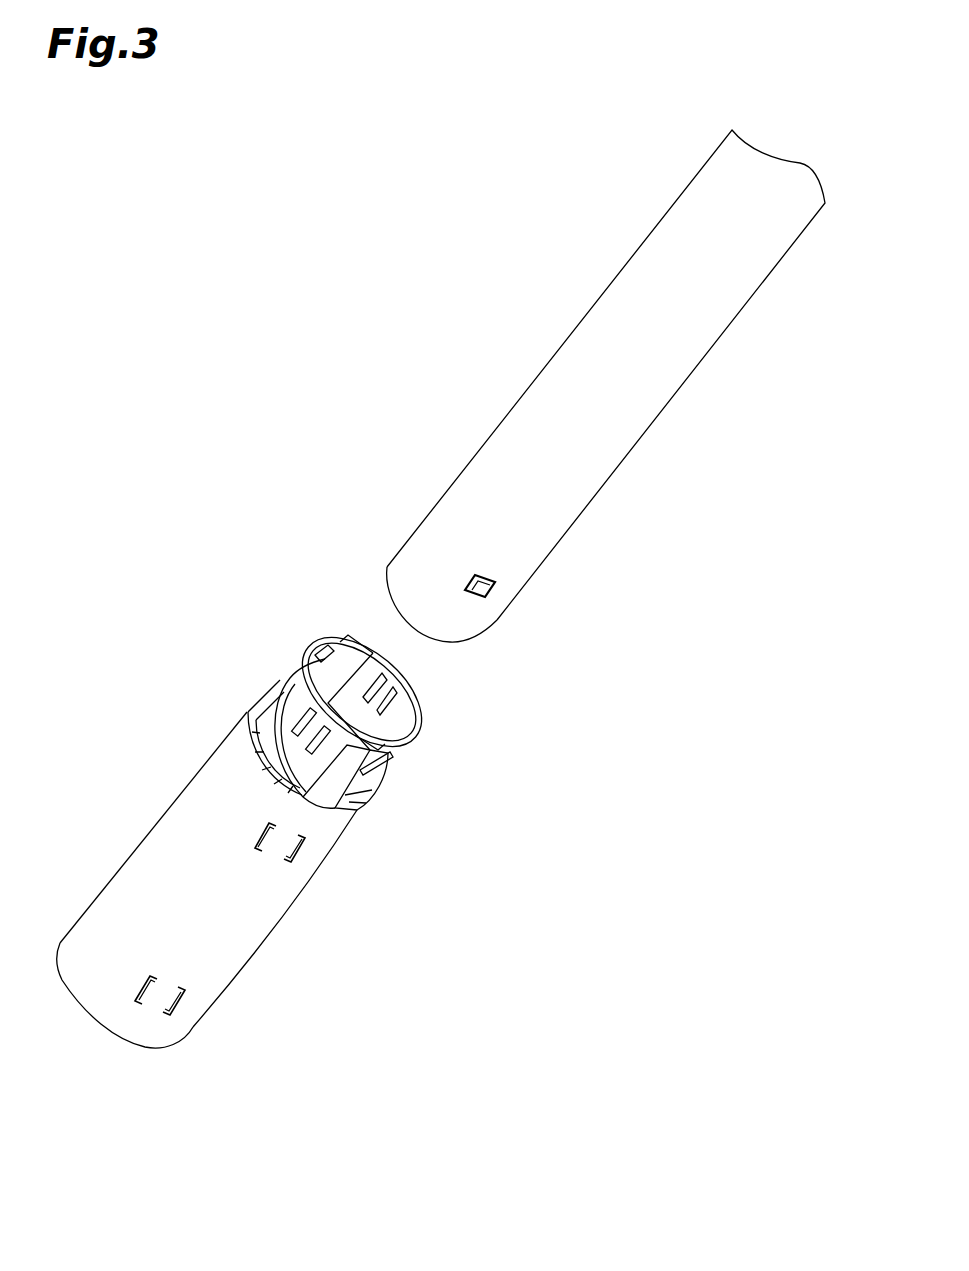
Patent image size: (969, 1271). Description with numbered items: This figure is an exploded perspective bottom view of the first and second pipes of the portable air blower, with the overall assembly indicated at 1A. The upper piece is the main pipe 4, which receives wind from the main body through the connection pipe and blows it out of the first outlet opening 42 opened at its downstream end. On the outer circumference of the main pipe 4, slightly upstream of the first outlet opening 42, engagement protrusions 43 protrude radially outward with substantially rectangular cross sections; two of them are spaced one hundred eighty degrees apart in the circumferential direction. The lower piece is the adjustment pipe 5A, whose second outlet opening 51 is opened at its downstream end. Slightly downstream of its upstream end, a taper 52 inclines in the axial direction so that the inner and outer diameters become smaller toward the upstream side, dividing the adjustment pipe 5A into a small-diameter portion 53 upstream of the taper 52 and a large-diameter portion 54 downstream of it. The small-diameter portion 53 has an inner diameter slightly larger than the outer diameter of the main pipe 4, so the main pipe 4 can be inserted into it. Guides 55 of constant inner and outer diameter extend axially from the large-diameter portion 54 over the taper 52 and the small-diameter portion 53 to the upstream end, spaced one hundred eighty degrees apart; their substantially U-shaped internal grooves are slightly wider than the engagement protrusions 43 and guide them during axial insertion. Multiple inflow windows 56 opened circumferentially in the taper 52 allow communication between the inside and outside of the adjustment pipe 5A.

The connector assembly 1A is at (250, 332).
The main pipe 4 is at (689, 347).
The first outlet opening 42 is at (440, 643).
The engagement protrusion 43 is at (494, 588).
The adjustment pipe 5A is at (331, 1064).
The second outlet opening 51 is at (139, 1047).
The taper 52 is at (257, 705).
The small-diameter portion 53 is at (292, 685).
The large-diameter portion 54 is at (243, 935).
The guide 55 is at (350, 630).
The inflow window 56 is at (302, 776).